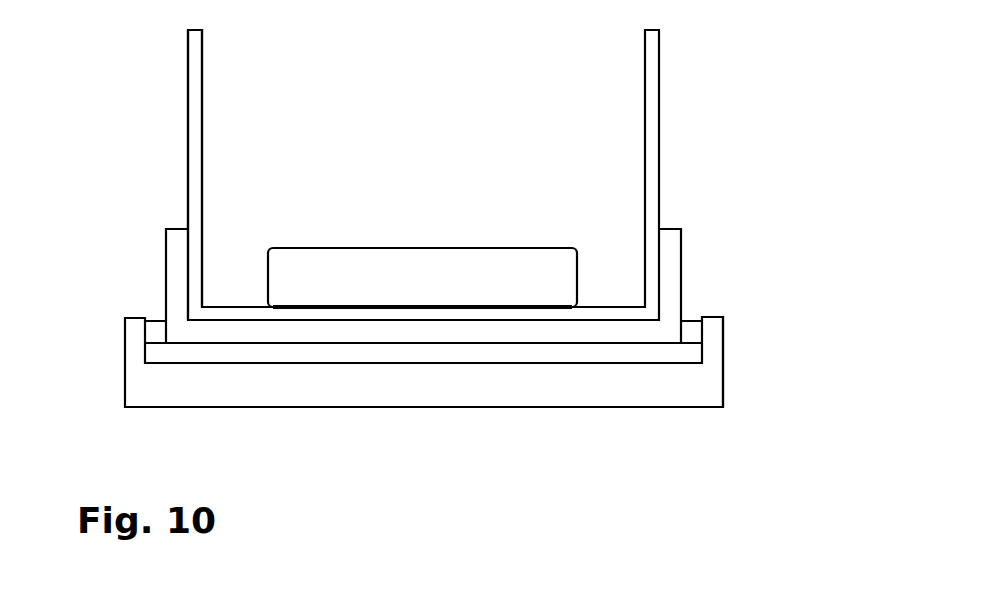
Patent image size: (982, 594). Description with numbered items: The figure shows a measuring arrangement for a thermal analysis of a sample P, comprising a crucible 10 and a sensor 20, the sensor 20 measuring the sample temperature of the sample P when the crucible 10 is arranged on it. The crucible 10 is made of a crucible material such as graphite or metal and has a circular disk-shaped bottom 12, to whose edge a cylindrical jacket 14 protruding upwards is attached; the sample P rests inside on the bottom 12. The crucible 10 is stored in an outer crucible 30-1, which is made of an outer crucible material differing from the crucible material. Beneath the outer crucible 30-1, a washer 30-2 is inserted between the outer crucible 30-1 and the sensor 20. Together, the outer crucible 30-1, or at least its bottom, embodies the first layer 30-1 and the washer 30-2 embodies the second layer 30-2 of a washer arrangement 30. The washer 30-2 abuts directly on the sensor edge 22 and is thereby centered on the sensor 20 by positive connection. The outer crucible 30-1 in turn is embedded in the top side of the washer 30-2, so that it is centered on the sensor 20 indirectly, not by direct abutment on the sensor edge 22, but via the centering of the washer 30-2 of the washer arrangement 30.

The crucible 10 is at (167, 112).
The bottom 12 is at (217, 315).
The cylindrical jacket 14 is at (196, 170).
The sensor 20 is at (109, 356).
The sensor edge 22 is at (713, 338).
The washer arrangement 30 is at (777, 227).
The outer crucible 30-1 is at (670, 262).
The washer 30-2 is at (634, 353).
The sample P is at (441, 237).